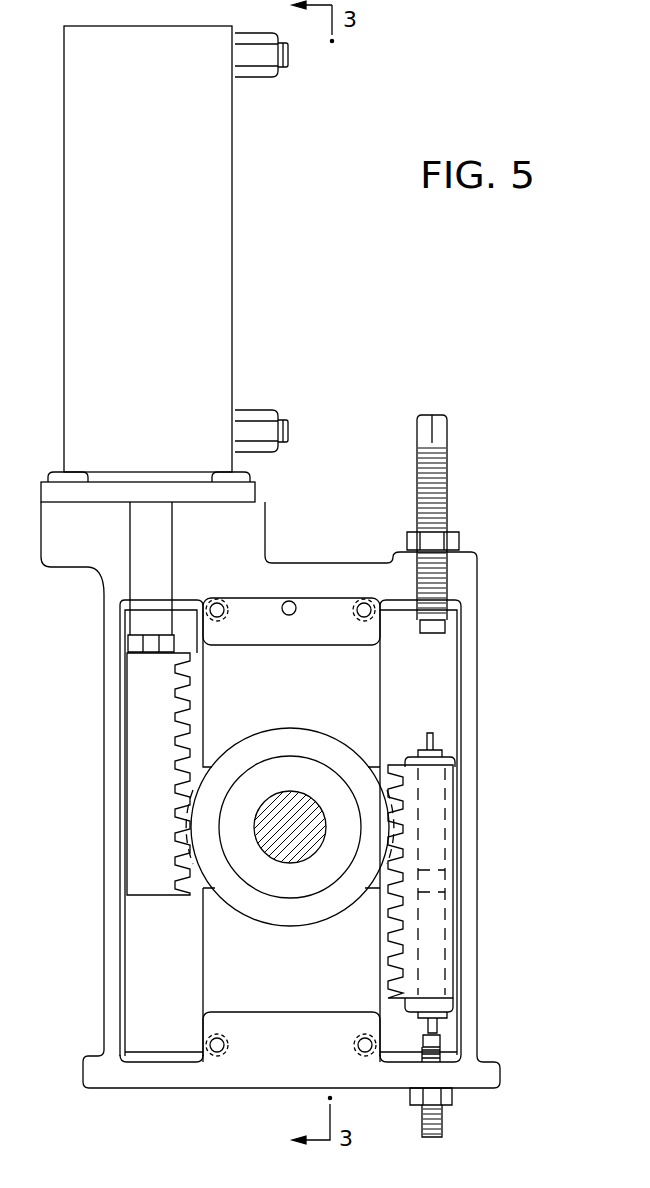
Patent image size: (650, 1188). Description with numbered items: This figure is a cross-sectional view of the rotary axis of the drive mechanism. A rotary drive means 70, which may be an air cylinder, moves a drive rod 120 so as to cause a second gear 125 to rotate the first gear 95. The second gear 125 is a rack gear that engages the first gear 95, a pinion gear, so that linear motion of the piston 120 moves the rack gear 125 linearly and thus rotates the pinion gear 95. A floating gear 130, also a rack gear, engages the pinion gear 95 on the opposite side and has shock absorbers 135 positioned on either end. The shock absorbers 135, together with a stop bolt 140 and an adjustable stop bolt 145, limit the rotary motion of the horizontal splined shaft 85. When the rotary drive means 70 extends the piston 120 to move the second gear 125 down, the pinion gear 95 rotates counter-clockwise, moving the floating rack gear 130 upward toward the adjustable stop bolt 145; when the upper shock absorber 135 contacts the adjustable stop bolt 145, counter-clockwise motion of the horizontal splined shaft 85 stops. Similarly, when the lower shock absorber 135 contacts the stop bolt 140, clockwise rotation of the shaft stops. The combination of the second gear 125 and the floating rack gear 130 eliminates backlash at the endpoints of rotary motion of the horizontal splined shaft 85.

The rotary drive means 70 is at (232, 268).
The horizontal splined shaft 85 is at (290, 790).
The first gear (pinion gear) 95 is at (253, 923).
The drive rod (piston) 120 is at (130, 567).
The second gear (rack gear) 125 is at (160, 897).
The floating gear (floating rack gear) 130 is at (388, 958).
The shock absorbers 135 is at (432, 733).
The stop bolt 140 is at (442, 1122).
The adjustable stop bolt 145 is at (447, 425).